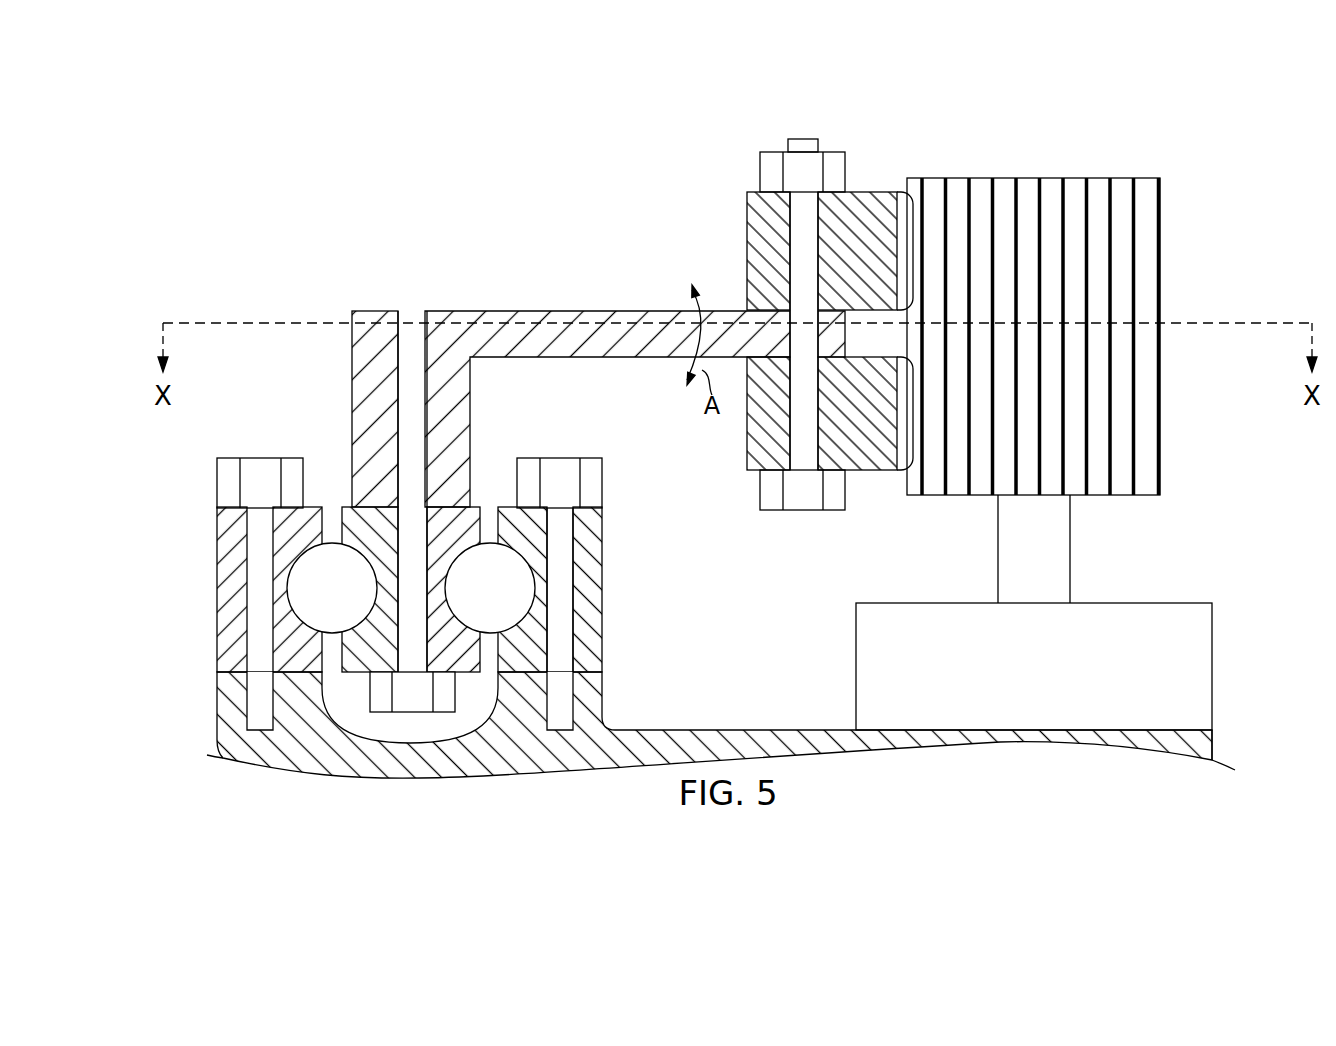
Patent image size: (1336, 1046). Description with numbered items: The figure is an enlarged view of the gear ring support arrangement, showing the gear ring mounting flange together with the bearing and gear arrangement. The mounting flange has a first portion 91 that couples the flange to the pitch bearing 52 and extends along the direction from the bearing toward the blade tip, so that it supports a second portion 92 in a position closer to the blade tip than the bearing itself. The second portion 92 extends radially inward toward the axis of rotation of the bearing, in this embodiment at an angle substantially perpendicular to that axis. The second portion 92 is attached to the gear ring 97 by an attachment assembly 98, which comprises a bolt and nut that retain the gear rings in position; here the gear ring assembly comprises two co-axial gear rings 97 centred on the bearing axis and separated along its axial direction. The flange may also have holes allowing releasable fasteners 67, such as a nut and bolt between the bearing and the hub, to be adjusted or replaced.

The pitch bearing 52 is at (197, 558).
The releasable fasteners 67 is at (572, 478).
The first portion 91 is at (368, 380).
The second portion 92 is at (607, 316).
The gear ring 97 is at (903, 203).
The attachment assembly 98 is at (805, 137).